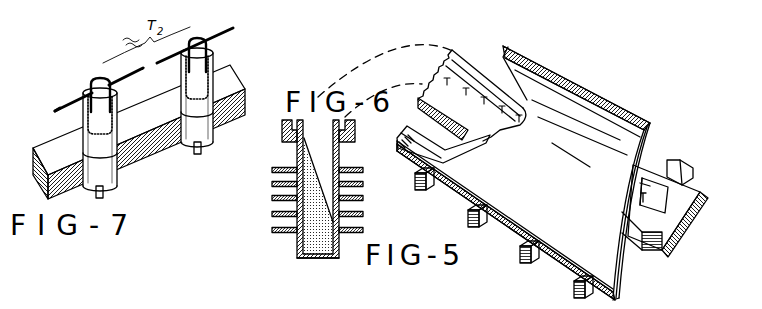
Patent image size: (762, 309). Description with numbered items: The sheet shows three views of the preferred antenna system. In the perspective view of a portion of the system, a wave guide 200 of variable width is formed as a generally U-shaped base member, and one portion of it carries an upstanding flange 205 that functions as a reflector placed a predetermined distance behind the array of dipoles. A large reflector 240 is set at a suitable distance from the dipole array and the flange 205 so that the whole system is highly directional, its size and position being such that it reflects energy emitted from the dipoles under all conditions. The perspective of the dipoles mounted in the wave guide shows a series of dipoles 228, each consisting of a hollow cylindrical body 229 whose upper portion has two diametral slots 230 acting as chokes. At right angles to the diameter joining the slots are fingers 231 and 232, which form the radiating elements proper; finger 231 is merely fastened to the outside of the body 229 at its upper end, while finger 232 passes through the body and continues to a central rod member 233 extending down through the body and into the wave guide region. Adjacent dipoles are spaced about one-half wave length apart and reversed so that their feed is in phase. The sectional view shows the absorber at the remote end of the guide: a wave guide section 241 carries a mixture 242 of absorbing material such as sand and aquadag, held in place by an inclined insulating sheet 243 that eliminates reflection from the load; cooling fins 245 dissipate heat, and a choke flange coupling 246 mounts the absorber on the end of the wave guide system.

In FIG. 5, the wave guide 200 is at (660, 253).
In FIG. 5, the upstanding flange 205 is at (652, 180).
In FIG. 7, the dipoles 228 is at (82, 89).
In FIG. 7, the hollow cylindrical body 229 is at (115, 122).
In FIG. 7, the diametral slots 230 is at (99, 77).
In FIG. 7, the finger 231 is at (56, 110).
In FIG. 7, the finger 232 is at (150, 67).
In FIG. 7, the central rod member 233 is at (104, 98).
In FIG. 5, the large reflector 240 is at (523, 173).
In FIG. 6, the wave guide section 241 is at (297, 153).
In FIG. 6, the mixture of absorbing material 242 is at (318, 257).
In FIG. 6, the insulating sheet 243 is at (318, 180).
In FIG. 6, the cooling fins 245 is at (272, 197).
In FIG. 6, the choke flange coupling 246 is at (283, 122).